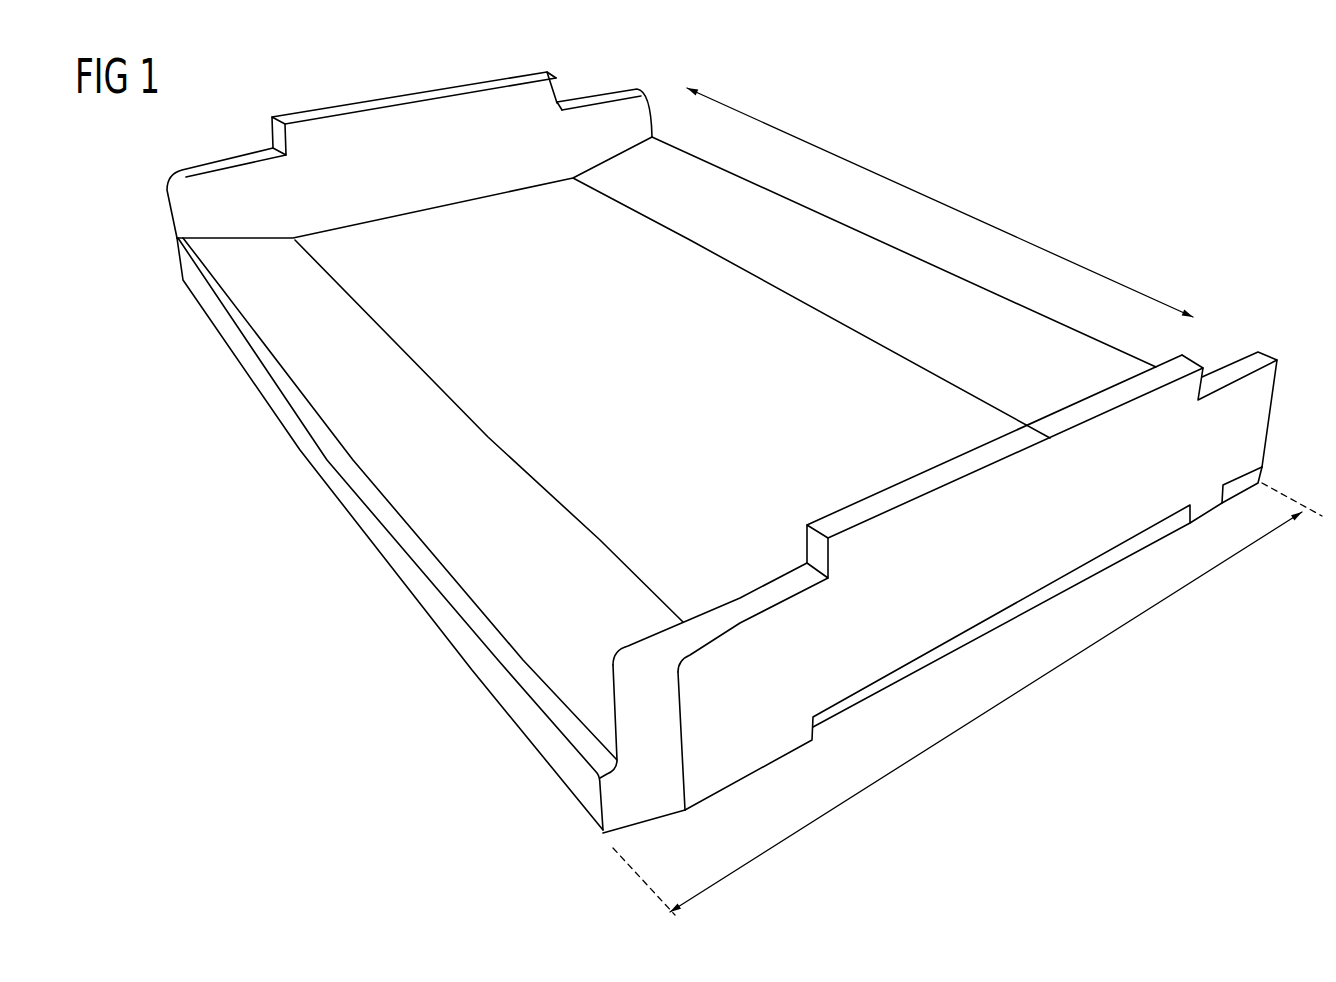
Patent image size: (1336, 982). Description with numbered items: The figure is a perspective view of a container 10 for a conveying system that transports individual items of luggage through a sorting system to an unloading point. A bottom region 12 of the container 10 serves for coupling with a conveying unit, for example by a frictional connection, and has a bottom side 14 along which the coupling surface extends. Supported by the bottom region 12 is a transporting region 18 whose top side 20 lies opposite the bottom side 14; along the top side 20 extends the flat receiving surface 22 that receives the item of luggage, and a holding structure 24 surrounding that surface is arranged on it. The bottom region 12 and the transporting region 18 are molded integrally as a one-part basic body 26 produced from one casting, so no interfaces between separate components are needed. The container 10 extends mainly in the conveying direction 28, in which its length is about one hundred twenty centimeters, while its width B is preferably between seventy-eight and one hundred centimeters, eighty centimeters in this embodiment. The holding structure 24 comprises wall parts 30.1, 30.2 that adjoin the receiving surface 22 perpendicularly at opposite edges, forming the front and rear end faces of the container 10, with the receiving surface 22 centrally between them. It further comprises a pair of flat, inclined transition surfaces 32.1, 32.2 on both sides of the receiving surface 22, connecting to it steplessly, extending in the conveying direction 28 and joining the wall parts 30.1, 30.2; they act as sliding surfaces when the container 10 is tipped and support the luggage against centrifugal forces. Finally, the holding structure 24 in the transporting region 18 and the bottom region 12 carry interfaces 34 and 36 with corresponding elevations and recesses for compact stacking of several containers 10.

The container 10 is at (1008, 113).
The bottom region 12 is at (619, 828).
The bottom side 14 is at (360, 582).
The transporting region 18 is at (483, 263).
The top side 20 is at (766, 300).
The receiving surface 22 is at (789, 416).
The holding structure 24 is at (1228, 352).
The basic body 26 is at (1002, 592).
The conveying direction 28 is at (922, 193).
The wall part 30.1 is at (317, 135).
The wall part 30.2 is at (865, 545).
The transition surface 32.1 is at (686, 172).
The transition surface 32.2 is at (292, 329).
The interface 34 is at (413, 92).
The interface 36 is at (907, 674).
The width B is at (1017, 689).